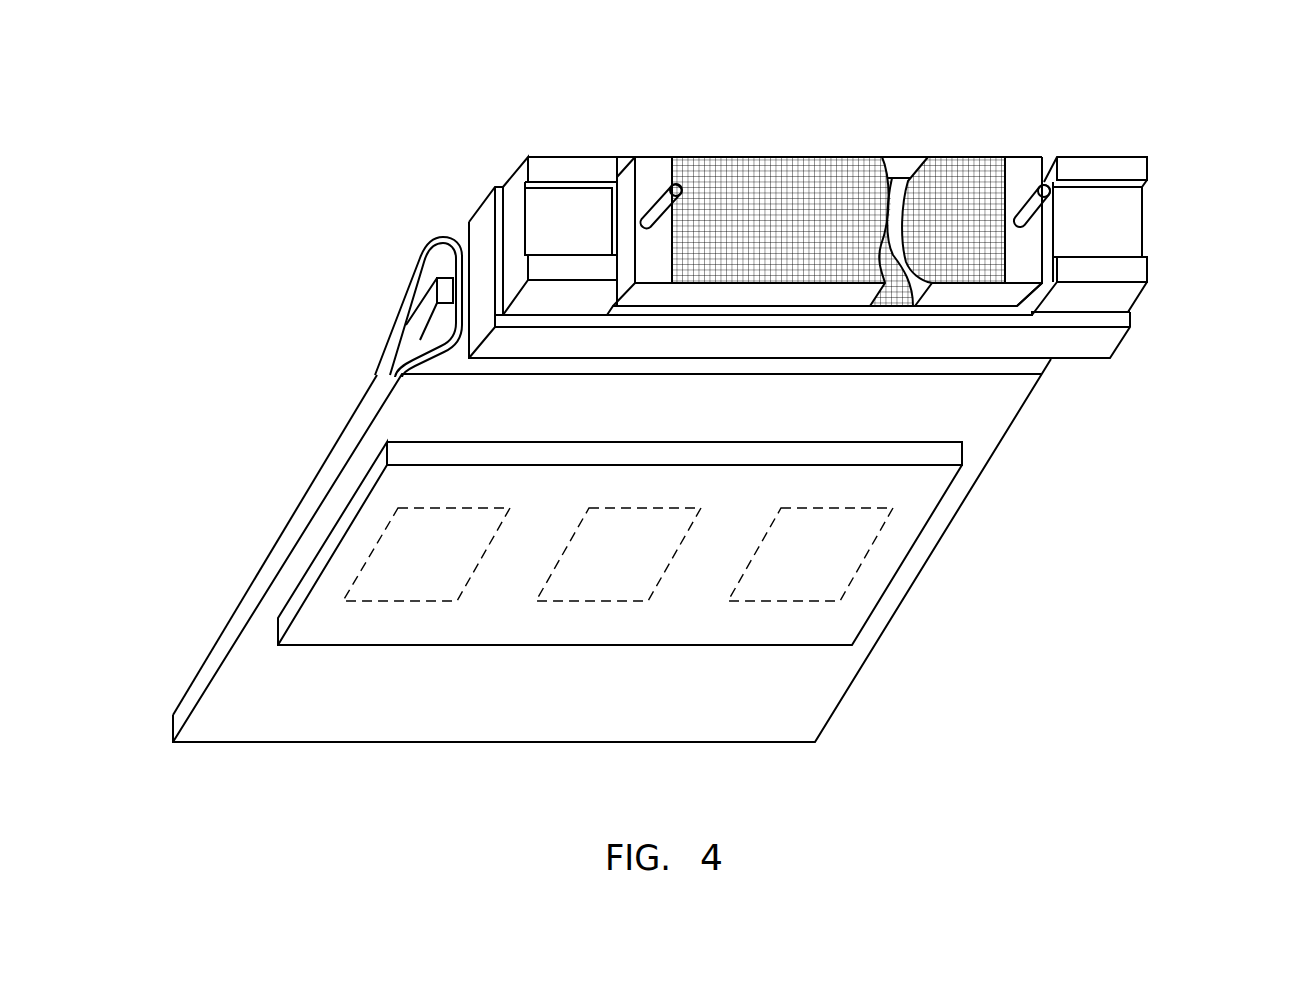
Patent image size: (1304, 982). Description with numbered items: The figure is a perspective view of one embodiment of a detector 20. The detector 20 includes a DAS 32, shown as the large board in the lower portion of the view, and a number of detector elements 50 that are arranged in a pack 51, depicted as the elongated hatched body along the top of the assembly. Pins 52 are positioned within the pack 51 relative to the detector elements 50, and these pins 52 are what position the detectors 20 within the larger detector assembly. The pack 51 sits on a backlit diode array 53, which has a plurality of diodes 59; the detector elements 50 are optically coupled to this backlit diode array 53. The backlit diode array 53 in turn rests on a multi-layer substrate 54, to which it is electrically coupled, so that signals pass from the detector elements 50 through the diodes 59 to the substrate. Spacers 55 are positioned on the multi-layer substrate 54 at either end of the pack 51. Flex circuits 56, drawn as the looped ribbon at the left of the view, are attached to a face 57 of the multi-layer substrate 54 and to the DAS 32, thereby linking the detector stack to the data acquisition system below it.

The detector 20 is at (1063, 106).
The DAS 32 is at (910, 565).
The detector elements 50 is at (757, 170).
The pack 51 is at (669, 118).
The pins 52 is at (653, 203).
The backlit diode array 53 is at (1001, 312).
The multi-layer substrate 54 is at (1107, 342).
The spacers 55 is at (560, 157).
The flex circuits 56 is at (428, 343).
The face 57 is at (468, 225).
The diodes 59 is at (900, 177).